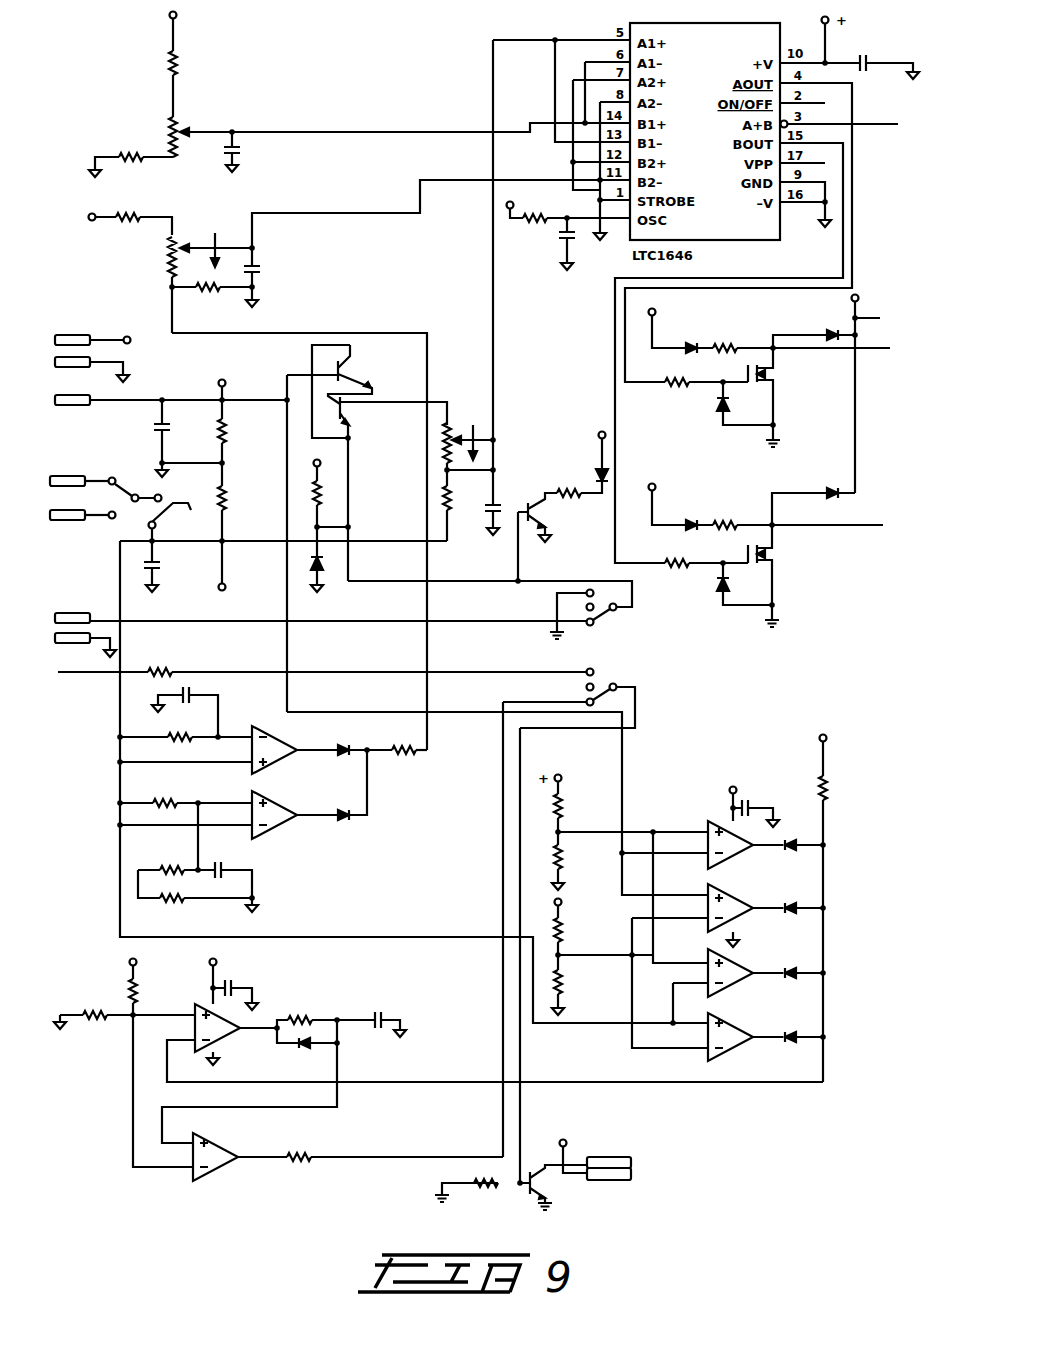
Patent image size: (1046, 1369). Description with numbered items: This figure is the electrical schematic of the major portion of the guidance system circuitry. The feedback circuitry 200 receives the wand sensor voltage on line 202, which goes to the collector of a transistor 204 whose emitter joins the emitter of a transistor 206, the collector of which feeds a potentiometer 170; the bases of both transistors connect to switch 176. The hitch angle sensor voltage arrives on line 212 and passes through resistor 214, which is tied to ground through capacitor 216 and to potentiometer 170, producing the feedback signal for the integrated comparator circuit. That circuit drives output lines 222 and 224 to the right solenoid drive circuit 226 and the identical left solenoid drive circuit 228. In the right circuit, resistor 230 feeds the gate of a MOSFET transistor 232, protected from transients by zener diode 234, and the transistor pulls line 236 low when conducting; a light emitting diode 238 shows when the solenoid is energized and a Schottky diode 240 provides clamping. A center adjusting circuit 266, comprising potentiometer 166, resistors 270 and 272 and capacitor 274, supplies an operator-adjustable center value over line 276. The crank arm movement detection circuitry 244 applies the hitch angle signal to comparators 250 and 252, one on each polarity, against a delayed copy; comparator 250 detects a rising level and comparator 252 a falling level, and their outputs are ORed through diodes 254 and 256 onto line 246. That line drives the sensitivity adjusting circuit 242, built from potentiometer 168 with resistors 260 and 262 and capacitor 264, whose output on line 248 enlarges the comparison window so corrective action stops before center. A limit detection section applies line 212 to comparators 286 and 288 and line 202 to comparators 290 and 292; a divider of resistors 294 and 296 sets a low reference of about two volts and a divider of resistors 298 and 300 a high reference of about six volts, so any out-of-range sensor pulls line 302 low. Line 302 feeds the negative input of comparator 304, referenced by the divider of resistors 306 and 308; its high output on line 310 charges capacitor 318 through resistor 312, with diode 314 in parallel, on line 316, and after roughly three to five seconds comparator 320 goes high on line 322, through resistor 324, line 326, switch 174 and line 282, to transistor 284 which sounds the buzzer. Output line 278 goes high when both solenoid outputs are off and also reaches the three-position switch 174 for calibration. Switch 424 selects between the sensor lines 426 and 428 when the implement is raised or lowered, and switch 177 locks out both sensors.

The resistor 272 is at (176, 55).
The center adjusting circuit 266 is at (208, 108).
The potentiometer 166 is at (173, 125).
The resistor 270 is at (129, 150).
The line 276 is at (345, 132).
The capacitor 274 is at (238, 160).
The resistor 262 is at (133, 210).
The sensitivity adjusting circuit 242 is at (120, 262).
The potentiometer 168 is at (167, 255).
The capacitor 264 is at (258, 263).
The resistor 260 is at (203, 295).
The line 248 is at (433, 179).
The output line 278 is at (135, 671).
The output line 222 is at (854, 168).
The output line 224 is at (846, 206).
The light emitting diode 238 is at (686, 347).
The right solenoid drive circuit 226 is at (758, 338).
The line 236 is at (820, 330).
The Schottky diode 240 is at (833, 340).
The MOSFET transistor 232 is at (775, 383).
The resistor 230 is at (672, 385).
The zener diode 234 is at (718, 415).
The left solenoid drive circuit 228 is at (800, 553).
The line 202 is at (145, 398).
The feedback circuitry 200 is at (135, 445).
The line 426 is at (66, 475).
The line 428 is at (85, 520).
The switch 424 is at (114, 520).
The switch 177 is at (176, 555).
The line 212 is at (245, 541).
The transistor 204 is at (354, 365).
The transistor 206 is at (356, 406).
The potentiometer 170 is at (449, 428).
The resistor 214 is at (451, 502).
The capacitor 216 is at (508, 505).
The line 246 is at (428, 632).
The switch 176 is at (616, 610).
The switch 174 is at (617, 688).
The crank arm movement detection circuitry 244 is at (110, 880).
The comparator 250 is at (294, 745).
The diode 254 is at (344, 746).
The comparator 252 is at (280, 804).
The diode 256 is at (343, 820).
The line 282 is at (520, 775).
The resistor 294 is at (565, 808).
The resistor 296 is at (565, 865).
The resistor 298 is at (565, 930).
The resistor 300 is at (565, 988).
The comparator 290 is at (712, 828).
The comparator 292 is at (735, 898).
The comparator 286 is at (748, 966).
The comparator 288 is at (735, 1024).
The line 302 is at (828, 872).
The resistor 306 is at (133, 975).
The comparator 304 is at (200, 1010).
The resistor 308 is at (98, 1022).
The line 310 is at (258, 1025).
The resistor 312 is at (302, 1015).
The line 316 is at (338, 1018).
The capacitor 318 is at (385, 1012).
The diode 314 is at (302, 1048).
The comparator 320 is at (218, 1142).
The line 322 is at (250, 1157).
The resistor 324 is at (305, 1152).
The line 326 is at (360, 1157).
The transistor 284 is at (560, 1186).